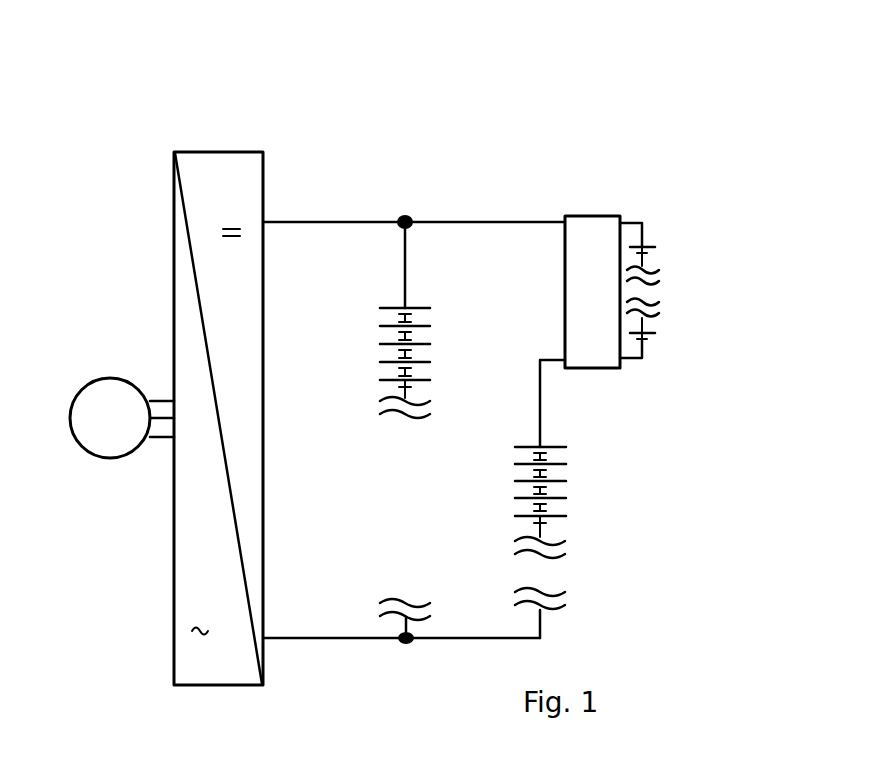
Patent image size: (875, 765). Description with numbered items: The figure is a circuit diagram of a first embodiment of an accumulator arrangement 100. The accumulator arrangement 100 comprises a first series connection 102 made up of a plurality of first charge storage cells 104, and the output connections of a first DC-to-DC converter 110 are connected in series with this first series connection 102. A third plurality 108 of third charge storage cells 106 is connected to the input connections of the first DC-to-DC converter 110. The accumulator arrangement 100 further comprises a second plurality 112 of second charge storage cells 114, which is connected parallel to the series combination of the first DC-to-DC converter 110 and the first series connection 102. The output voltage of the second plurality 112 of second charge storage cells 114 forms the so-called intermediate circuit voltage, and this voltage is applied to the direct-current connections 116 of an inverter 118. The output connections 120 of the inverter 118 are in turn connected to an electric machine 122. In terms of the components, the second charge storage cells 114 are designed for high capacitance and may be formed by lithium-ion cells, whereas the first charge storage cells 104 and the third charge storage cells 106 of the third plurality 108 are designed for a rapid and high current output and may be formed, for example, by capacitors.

The accumulator arrangement 100 is at (650, 70).
The first series connection 102 is at (684, 499).
The first charge storage cell 104 is at (718, 457).
The third charge storage cell 106 is at (727, 275).
The third plurality 108 is at (655, 247).
The first DC-to-DC converter 110 is at (580, 253).
The second plurality 112 is at (459, 323).
The second charge storage cell 114 is at (433, 310).
The direct-current connections 116 is at (290, 500).
The inverter 118 is at (200, 168).
The output connections 120 is at (160, 392).
The electric machine 122 is at (113, 402).